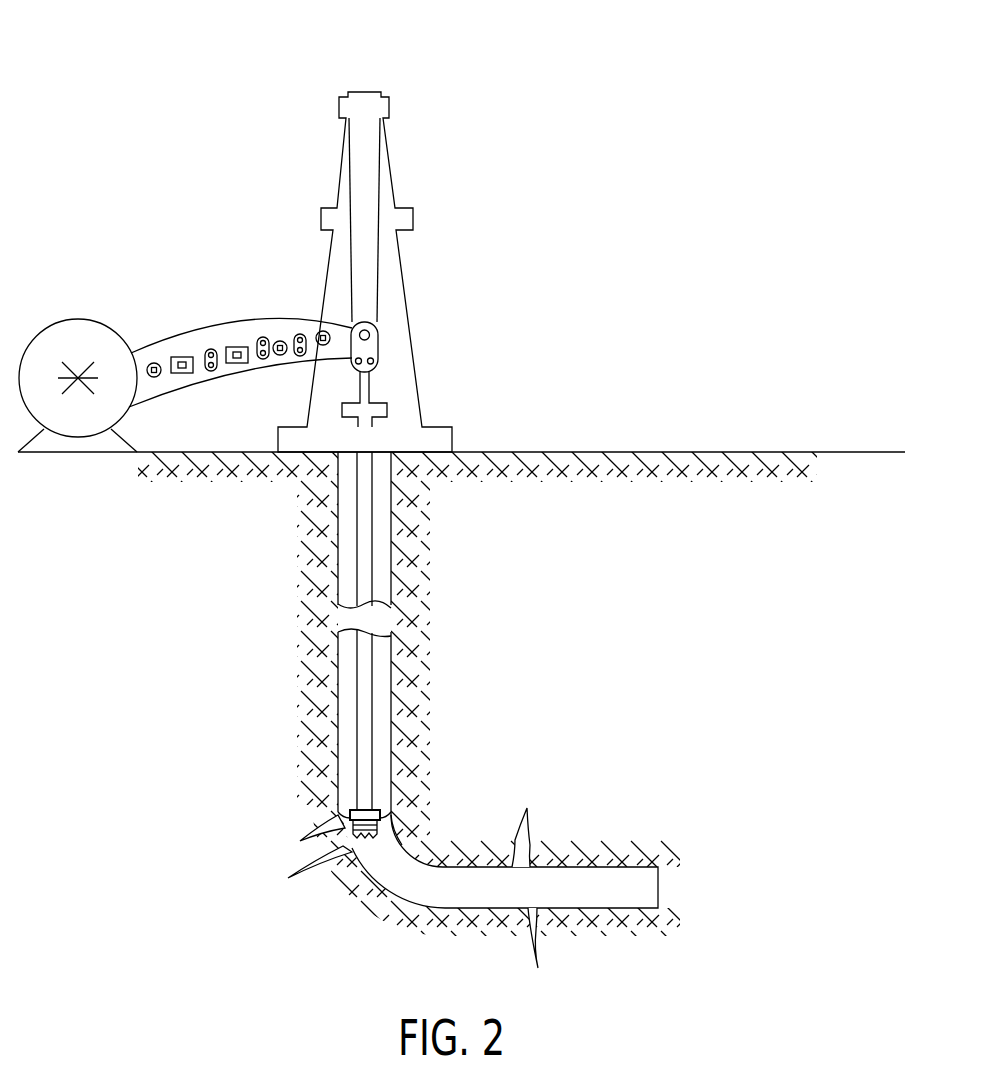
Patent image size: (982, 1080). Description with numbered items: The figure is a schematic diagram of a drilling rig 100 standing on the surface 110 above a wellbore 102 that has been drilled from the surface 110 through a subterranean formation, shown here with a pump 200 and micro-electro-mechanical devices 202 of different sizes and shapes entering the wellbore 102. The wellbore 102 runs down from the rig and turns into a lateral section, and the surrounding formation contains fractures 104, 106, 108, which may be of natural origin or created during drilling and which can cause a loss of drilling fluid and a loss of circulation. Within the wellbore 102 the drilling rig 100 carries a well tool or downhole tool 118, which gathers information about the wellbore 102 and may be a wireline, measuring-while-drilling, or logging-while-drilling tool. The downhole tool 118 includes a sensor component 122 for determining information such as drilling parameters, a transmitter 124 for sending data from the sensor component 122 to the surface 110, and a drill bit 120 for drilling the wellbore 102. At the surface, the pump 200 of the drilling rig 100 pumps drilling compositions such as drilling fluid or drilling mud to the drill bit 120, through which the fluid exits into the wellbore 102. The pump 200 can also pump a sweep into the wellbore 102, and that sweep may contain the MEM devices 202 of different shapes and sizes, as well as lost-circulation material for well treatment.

The drilling rig 100 is at (496, 84).
The wellbore 102 is at (392, 690).
The fracture 104 is at (296, 877).
The fracture 106 is at (529, 818).
The fracture 108 is at (541, 953).
The surface 110 is at (663, 446).
The downhole tool 118 is at (382, 570).
The drill bit 120 is at (300, 841).
The sensor component 122 is at (394, 816).
The transmitter 124 is at (340, 814).
The pump 200 is at (78, 318).
The MEM devices 202 is at (185, 336).